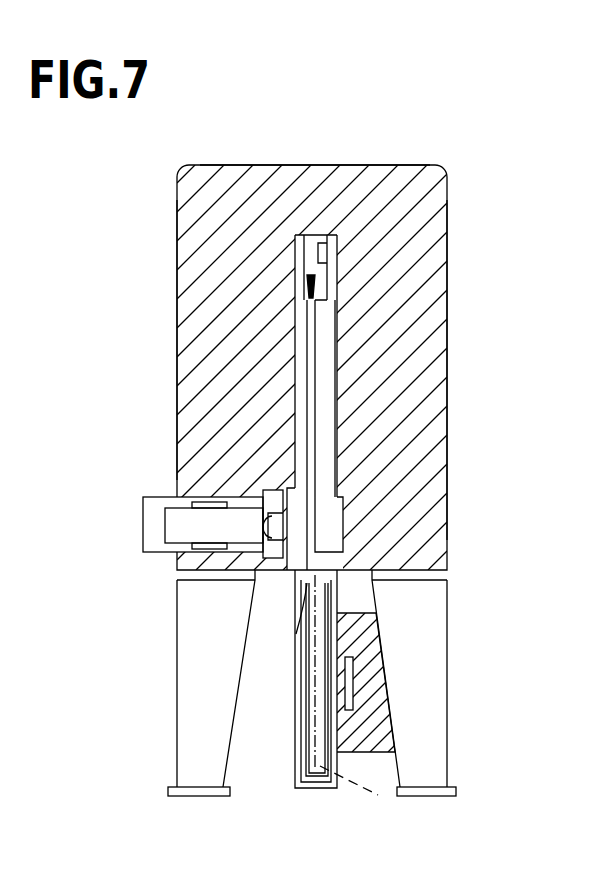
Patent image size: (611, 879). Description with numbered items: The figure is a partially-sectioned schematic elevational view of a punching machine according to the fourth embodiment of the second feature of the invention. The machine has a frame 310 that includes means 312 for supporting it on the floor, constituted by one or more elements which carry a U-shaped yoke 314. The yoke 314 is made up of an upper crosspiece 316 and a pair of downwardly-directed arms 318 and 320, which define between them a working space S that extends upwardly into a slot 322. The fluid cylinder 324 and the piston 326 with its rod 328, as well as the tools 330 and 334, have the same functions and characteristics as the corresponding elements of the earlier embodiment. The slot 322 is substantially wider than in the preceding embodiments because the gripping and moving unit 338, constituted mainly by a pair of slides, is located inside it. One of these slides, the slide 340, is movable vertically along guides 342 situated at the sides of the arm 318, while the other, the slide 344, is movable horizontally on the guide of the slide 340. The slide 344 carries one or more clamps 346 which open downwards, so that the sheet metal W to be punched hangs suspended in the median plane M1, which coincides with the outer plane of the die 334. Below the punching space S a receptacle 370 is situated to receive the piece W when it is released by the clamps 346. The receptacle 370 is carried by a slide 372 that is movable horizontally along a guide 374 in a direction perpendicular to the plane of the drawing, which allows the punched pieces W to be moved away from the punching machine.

The frame 310 is at (327, 442).
The means for supporting the frame on the floor 312 is at (440, 620).
The U-shaped yoke 314 is at (465, 368).
The upper crosspiece 316 is at (310, 167).
The arm 318 is at (440, 270).
The arm 320 is at (187, 262).
The slot 322 is at (297, 355).
The fluid cylinder 324 is at (145, 538).
The piston 326 is at (193, 530).
The rod 328 is at (270, 540).
The tool 330 is at (285, 503).
The die 334 is at (337, 520).
The gripping and moving unit 338 is at (298, 300).
The slide 340 is at (338, 237).
The guides 342 is at (338, 268).
The slide 344 is at (312, 237).
The clamps 346 is at (313, 276).
The receptacle 370 is at (298, 766).
The slide 372 is at (342, 728).
The guide 374 is at (346, 704).
The sheet metal W is at (312, 410).
The working space S is at (298, 636).
The median plane M1 is at (371, 795).